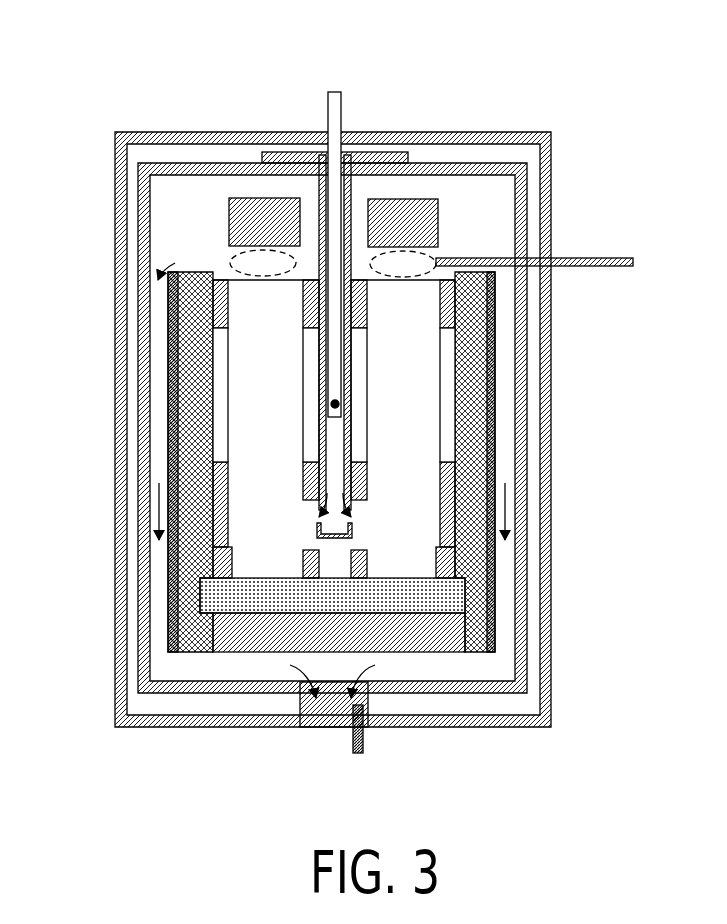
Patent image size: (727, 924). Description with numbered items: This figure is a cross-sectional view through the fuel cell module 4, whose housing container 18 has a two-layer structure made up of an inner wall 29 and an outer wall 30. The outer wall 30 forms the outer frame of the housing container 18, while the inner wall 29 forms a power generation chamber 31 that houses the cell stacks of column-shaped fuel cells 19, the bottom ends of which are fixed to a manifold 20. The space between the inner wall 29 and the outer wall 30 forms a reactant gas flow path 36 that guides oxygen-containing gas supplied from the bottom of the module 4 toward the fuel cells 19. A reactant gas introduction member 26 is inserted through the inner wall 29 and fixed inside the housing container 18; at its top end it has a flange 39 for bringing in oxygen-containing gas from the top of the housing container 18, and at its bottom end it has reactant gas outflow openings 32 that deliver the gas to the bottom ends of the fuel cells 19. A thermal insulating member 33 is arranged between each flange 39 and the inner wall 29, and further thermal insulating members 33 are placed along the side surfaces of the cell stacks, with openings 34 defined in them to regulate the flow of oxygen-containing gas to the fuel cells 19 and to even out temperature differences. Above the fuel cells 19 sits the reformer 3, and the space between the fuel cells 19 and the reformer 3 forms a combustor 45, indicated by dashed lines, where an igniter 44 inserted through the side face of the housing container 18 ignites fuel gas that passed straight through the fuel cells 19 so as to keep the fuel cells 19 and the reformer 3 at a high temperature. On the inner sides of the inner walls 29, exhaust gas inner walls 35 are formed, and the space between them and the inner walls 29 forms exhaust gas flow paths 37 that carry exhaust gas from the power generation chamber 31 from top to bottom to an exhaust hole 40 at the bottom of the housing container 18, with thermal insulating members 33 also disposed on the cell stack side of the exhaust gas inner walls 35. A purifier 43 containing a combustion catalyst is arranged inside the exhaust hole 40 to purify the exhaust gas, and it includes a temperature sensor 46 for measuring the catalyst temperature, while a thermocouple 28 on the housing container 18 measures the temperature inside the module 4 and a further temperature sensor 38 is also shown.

The fuel cell module 4 is at (305, 368).
The housing container 18 is at (305, 405).
The outer wall 30 is at (487, 132).
The power generation chamber 31 is at (172, 188).
The reactant gas introduction member 26 is at (318, 191).
The thermocouple 28 is at (330, 122).
The flange 39 is at (367, 155).
The thermal insulating member 33 is at (397, 158).
The reformer 3 is at (428, 200).
The combustor 45 is at (232, 252).
The fuel cell 19 is at (248, 295).
The inner wall 29 is at (540, 261).
The igniter 44 is at (550, 263).
The exhaust gas inner wall 35 is at (495, 328).
The opening 34 is at (223, 422).
The reactant gas flow path 36 is at (132, 500).
The exhaust gas flow path 37 is at (155, 588).
The temperature sensor 38 is at (333, 403).
The reactant gas outflow opening 32 is at (323, 512).
The manifold 20 is at (465, 598).
The exhaust hole 40 is at (305, 708).
The purifier 43 is at (333, 717).
The temperature sensor 46 is at (362, 733).